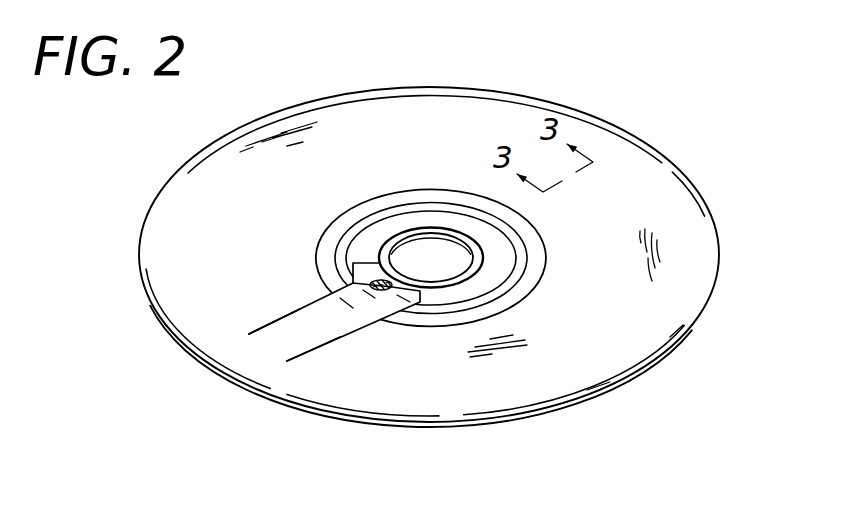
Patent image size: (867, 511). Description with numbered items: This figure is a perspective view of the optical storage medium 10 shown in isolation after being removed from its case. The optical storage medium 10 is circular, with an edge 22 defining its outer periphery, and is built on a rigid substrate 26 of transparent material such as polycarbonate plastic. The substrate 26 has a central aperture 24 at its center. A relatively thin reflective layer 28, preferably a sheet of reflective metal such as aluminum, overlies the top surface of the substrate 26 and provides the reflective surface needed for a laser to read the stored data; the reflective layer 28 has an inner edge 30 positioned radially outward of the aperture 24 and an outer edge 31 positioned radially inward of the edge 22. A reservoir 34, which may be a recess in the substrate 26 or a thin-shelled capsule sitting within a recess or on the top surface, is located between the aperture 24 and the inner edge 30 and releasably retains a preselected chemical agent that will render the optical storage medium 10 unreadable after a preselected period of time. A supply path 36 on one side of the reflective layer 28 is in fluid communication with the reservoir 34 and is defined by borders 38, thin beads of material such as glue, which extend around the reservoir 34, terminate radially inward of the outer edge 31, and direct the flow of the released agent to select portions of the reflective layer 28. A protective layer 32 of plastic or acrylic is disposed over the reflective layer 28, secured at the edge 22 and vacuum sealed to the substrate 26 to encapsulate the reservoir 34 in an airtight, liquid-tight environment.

The optical storage medium 10 is at (662, 136).
The edge 22 is at (720, 268).
The central aperture 24 is at (407, 247).
The rigid substrate 26 is at (465, 292).
The reflective layer 28 is at (538, 392).
The inner edge 30 is at (538, 287).
The outer edge 31 is at (679, 337).
The protective layer 32 is at (653, 260).
The reservoir 34 is at (353, 283).
The supply path 36 is at (280, 348).
The borders 38 is at (248, 334).